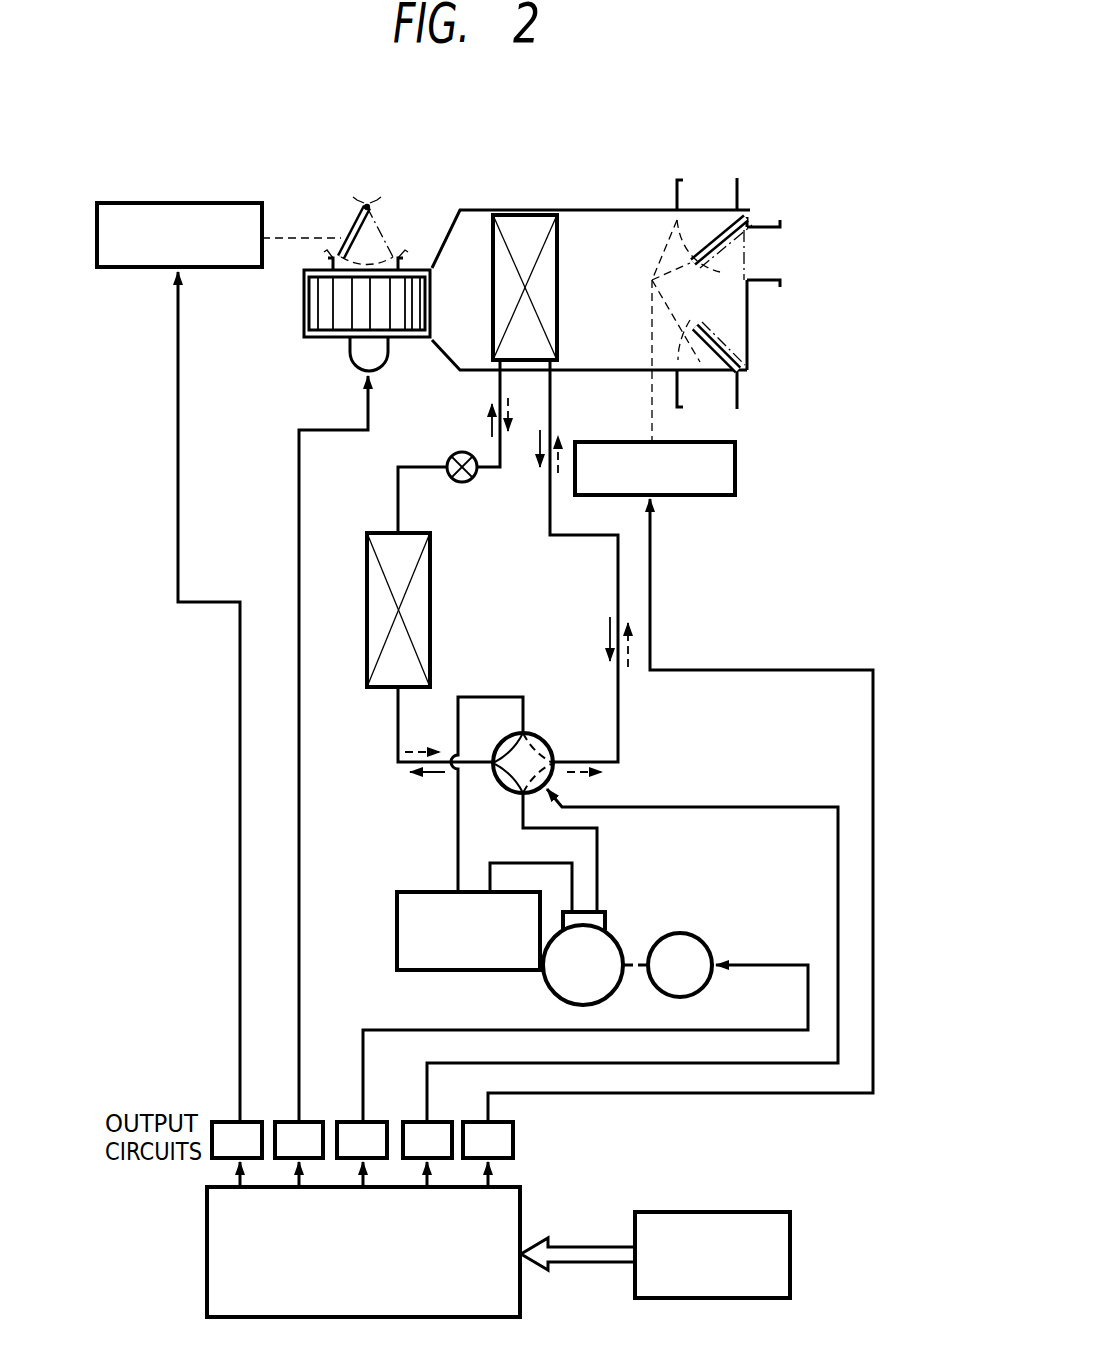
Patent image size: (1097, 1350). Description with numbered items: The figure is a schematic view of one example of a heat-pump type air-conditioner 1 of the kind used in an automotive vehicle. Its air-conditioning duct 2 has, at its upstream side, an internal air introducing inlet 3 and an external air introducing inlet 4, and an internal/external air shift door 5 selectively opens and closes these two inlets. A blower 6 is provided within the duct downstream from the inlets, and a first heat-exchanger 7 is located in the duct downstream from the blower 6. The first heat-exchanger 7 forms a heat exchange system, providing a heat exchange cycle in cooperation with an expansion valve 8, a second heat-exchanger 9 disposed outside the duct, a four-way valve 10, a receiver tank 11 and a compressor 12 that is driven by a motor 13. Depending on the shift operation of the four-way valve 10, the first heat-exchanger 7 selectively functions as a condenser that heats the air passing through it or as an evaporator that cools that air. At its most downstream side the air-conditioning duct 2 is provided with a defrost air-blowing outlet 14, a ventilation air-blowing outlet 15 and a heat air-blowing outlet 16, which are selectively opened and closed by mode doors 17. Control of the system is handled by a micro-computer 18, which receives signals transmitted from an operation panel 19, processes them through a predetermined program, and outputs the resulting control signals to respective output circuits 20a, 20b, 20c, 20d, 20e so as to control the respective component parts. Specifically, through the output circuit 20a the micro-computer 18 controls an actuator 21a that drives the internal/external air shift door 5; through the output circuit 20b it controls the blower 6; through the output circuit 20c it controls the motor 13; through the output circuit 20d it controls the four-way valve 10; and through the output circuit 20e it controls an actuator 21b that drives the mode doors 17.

The heat-pump type air-conditioner 1 is at (524, 250).
The air-conditioning duct 2 is at (591, 256).
The internal air introducing inlet 3 is at (408, 217).
The external air introducing inlet 4 is at (324, 217).
The internal/external air shift door 5 is at (327, 231).
The blower 6 is at (367, 337).
The first heat-exchanger 7 is at (525, 257).
The expansion valve 8 is at (469, 490).
The second heat-exchanger 9 is at (418, 610).
The four-way valve 10 is at (538, 741).
The receiver tank 11 is at (436, 930).
The compressor 12 is at (662, 927).
The motor 13 is at (702, 960).
The defrost air-blowing outlet 14 is at (720, 198).
The ventilation air-blowing outlet 15 is at (786, 268).
The heat air-blowing outlet 16 is at (720, 410).
The mode doors 17 is at (682, 330).
The micro-computer 18 is at (394, 1247).
The operation panel 19 is at (726, 1239).
The output circuit 20a is at (227, 1114).
The output circuit 20b is at (289, 1109).
The output circuit 20c is at (349, 1114).
The output circuit 20d is at (414, 1109).
The output circuit 20e is at (477, 1117).
The actuator 21a is at (179, 211).
The actuator 21b is at (684, 464).